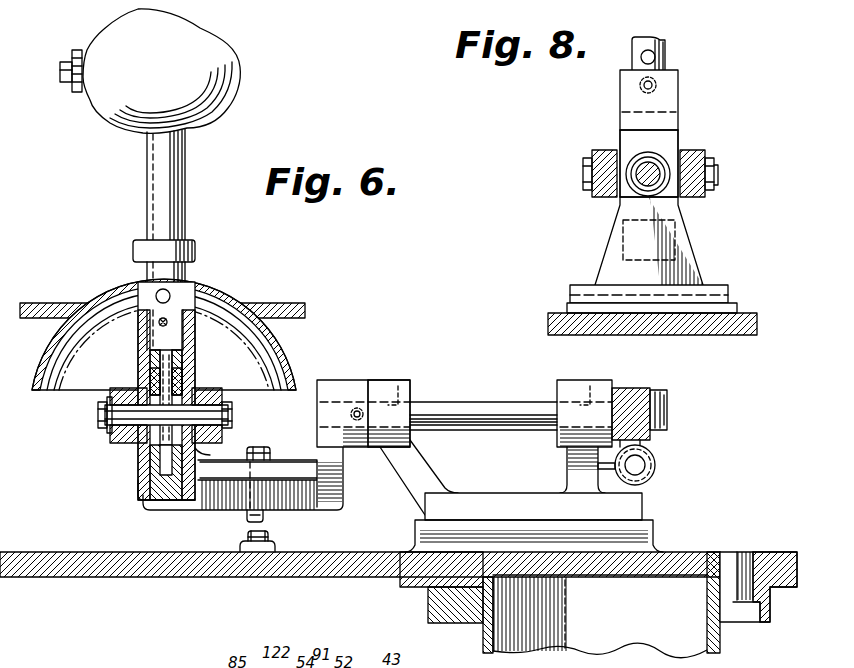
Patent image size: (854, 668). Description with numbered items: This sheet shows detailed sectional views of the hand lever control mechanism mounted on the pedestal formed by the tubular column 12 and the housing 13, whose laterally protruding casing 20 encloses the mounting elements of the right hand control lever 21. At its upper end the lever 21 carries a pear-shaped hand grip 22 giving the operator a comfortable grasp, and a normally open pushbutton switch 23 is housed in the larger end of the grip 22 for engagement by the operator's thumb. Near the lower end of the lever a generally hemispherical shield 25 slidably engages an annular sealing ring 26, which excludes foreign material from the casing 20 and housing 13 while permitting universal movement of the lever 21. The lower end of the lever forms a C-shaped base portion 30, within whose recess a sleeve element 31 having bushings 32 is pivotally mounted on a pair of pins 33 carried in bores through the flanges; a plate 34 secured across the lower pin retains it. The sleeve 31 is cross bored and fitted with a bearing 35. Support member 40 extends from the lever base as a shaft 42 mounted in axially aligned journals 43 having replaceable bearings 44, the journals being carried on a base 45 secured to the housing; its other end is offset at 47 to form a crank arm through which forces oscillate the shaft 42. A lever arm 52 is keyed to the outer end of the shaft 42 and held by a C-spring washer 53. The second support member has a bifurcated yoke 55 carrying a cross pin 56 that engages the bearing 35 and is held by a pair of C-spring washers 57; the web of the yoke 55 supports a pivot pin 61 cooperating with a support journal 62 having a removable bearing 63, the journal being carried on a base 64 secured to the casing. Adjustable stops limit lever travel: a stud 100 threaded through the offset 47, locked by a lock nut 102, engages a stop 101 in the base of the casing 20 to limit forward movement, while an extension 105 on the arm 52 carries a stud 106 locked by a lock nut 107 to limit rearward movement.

In FIG. 6, the tubular column 12 is at (720, 640).
In FIG. 6, the housing 13 is at (732, 550).
In FIG. 6, the casing 20 is at (170, 578).
In FIG. 8, the casing 20 is at (548, 320).
In FIG. 6, the control lever 21 is at (186, 167).
In FIG. 8, the control lever 21 is at (667, 56).
In FIG. 6, the hand grip 22 is at (220, 36).
In FIG. 6, the pushbutton switch 23 is at (62, 58).
In FIG. 6, the hemispherical shield 25 is at (215, 283).
In FIG. 6, the sealing ring 26 is at (278, 303).
In FIG. 6, the base portion 30 is at (196, 322).
In FIG. 8, the base portion 30 is at (679, 92).
In FIG. 6, the sleeve element 31 is at (193, 380).
In FIG. 8, the sleeve element 31 is at (620, 141).
In FIG. 6, the bushings 32 is at (156, 385).
In FIG. 6, the pins 33 is at (192, 360).
In FIG. 6, the plate 34 is at (150, 512).
In FIG. 8, the plate 34 is at (622, 252).
In FIG. 6, the bearing 35 is at (200, 452).
In FIG. 6, the support member 40 is at (346, 378).
In FIG. 6, the shaft 42 is at (473, 402).
In FIG. 6, the journals 43 is at (393, 382).
In FIG. 6, the bearings 44 is at (408, 392).
In FIG. 6, the base 45 is at (492, 493).
In FIG. 6, the offset 47 is at (298, 508).
In FIG. 6, the lever arm 52 is at (637, 388).
In FIG. 6, the C-spring washer 53 is at (668, 393).
In FIG. 6, the yoke 55 is at (215, 392).
In FIG. 8, the yoke 55 is at (703, 151).
In FIG. 6, the cross pin 56 is at (98, 415).
In FIG. 8, the cross pin 56 is at (718, 178).
In FIG. 6, the C-spring washers 57 is at (232, 428).
In FIG. 8, the C-spring washers 57 is at (715, 162).
In FIG. 8, the pivot pin 61 is at (643, 184).
In FIG. 8, the support journal 62 is at (667, 156).
In FIG. 8, the bearing 63 is at (660, 186).
In FIG. 8, the base 64 is at (718, 285).
In FIG. 6, the stud 100 is at (247, 518).
In FIG. 6, the stop 101 is at (275, 541).
In FIG. 6, the lock nut 102 is at (270, 450).
In FIG. 6, the extension 105 is at (652, 478).
In FIG. 6, the stud 106 is at (640, 465).
In FIG. 6, the lock nut 107 is at (655, 456).